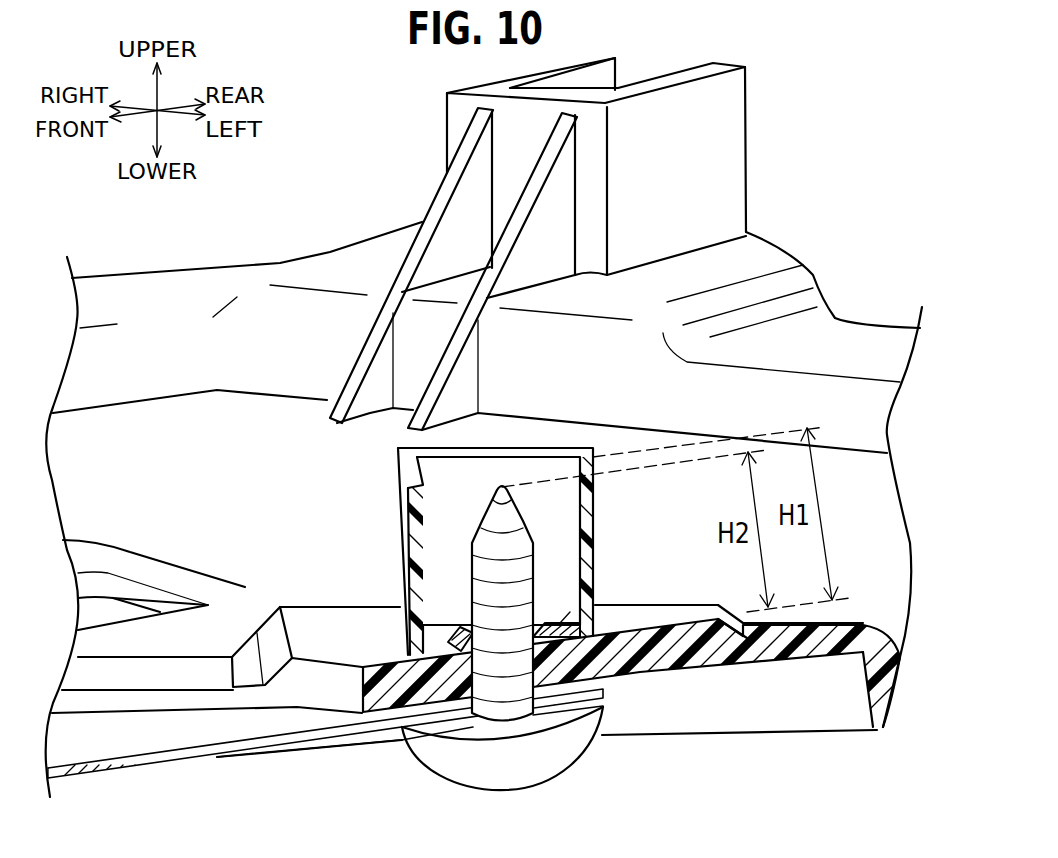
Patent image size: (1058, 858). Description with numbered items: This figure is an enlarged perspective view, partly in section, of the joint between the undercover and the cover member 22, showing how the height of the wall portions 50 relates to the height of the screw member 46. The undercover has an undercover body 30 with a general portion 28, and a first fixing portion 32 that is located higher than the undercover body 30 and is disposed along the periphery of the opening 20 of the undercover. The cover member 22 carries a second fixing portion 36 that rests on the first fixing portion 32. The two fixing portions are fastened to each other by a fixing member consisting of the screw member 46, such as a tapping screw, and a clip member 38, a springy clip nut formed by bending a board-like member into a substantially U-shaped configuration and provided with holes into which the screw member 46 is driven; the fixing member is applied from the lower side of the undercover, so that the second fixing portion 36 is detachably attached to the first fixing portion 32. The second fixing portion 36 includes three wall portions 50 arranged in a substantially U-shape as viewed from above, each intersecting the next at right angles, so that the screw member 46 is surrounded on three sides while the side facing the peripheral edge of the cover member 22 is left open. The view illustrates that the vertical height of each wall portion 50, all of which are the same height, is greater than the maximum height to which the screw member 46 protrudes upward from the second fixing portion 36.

The opening 20 is at (605, 692).
The cover member 22 is at (713, 673).
The general portion 28 is at (217, 757).
The undercover body 30 is at (90, 770).
The first fixing portion 32 is at (435, 727).
The second fixing portion 36 is at (380, 705).
The clip member 38 is at (560, 622).
The screw member 46 is at (560, 777).
The wall portion 50 is at (530, 77).